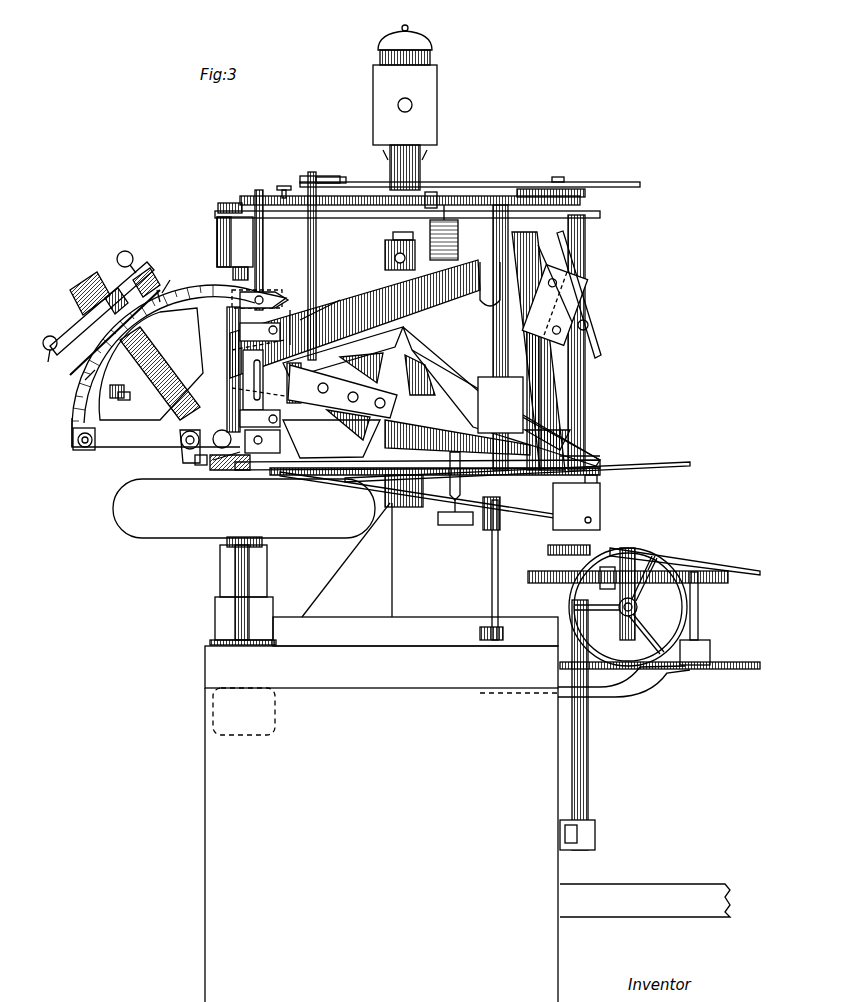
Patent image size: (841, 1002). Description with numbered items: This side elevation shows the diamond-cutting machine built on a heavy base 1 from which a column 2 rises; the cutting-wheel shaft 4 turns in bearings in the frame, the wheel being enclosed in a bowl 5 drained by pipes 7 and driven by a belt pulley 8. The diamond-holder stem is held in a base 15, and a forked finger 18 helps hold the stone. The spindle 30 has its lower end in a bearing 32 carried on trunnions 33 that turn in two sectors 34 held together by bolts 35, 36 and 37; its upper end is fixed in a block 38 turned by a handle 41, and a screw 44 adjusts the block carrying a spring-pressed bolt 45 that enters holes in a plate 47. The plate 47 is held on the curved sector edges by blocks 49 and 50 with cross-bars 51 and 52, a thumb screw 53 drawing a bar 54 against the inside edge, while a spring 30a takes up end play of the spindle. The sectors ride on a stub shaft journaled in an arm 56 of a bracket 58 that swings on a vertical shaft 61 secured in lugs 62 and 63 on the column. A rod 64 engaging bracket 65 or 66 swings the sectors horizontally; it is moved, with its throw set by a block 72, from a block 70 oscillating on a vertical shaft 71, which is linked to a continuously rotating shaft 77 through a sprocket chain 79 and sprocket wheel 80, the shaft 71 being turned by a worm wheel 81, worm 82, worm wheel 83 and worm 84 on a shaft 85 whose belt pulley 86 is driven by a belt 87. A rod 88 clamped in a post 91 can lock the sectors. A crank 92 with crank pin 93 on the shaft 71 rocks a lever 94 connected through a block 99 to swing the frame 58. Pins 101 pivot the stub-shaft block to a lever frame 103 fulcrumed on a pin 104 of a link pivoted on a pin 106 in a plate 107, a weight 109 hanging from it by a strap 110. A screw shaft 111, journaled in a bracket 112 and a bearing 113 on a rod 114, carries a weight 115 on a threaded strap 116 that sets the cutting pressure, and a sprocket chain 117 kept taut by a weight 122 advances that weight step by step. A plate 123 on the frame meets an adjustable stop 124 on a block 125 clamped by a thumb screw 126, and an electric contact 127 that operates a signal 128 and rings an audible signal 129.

The base 1 is at (452, 576).
The column 2 is at (433, 342).
The shaft 4 is at (220, 206).
The bowl 5 is at (125, 510).
The pipes 7 is at (235, 576).
The belt pulley 8 is at (277, 715).
The base 15 is at (225, 470).
The finger 18 is at (262, 470).
The spindle 30 is at (160, 350).
The spring 30a is at (85, 385).
The bearing 32 is at (213, 460).
The trunnions 33 is at (213, 435).
The sectors 34 is at (205, 284).
The bolt 35 is at (78, 442).
The bolt 36 is at (270, 292).
The bolt 37 is at (280, 441).
The block 38 is at (86, 282).
The handle 41 is at (47, 350).
The screw 44 is at (114, 292).
The spring-pressed bolt 45 is at (127, 251).
The plate 47 is at (150, 270).
The block 49 is at (74, 426).
The block 50 is at (172, 284).
The cross-bar 51 is at (240, 418).
The cross-bar 52 is at (162, 298).
The thumb screw 53 is at (118, 400).
The bar 54 is at (124, 392).
The arm 56 is at (240, 330).
The bracket 58 is at (330, 290).
The vertical shaft 61 is at (478, 302).
The lug 62 is at (385, 254).
The lug 63 is at (360, 540).
The rod 64 is at (650, 466).
The bracket 65 is at (195, 465).
The bracket 66 is at (88, 450).
The block 70 is at (600, 513).
The vertical shaft 71 is at (585, 256).
The block 72 is at (75, 338).
The continuously rotating shaft 77 is at (590, 773).
The sprocket chain 79 is at (633, 556).
The sprocket wheel 80 is at (590, 549).
The worm wheel 81 is at (540, 584).
The worm 82 is at (575, 586).
The worm wheel 83 is at (655, 566).
The worm 84 is at (640, 618).
The shaft 85 is at (621, 613).
The belt pulley 86 is at (707, 645).
The belt 87 is at (740, 571).
The rod 88 is at (400, 507).
The post 91 is at (336, 178).
The crank 92 is at (535, 189).
The crank pin 93 is at (566, 179).
The lever 94 is at (640, 184).
The block 99 is at (312, 172).
The pins 101 is at (250, 372).
The frame 103 is at (540, 440).
The pin 104 is at (355, 319).
The pin 106 is at (342, 391).
The plate 107 is at (292, 325).
The weight 109 is at (455, 525).
The strap 110 is at (450, 460).
The screw shaft 111 is at (430, 196).
The bracket 112 is at (512, 246).
The bearing 113 is at (272, 188).
The rod 114 is at (222, 245).
The weight 115 is at (432, 236).
The strap 116 is at (440, 200).
The sprocket chain 117 is at (500, 350).
The weight 122 is at (507, 400).
The plate 123 is at (600, 455).
The stop 124 is at (601, 352).
The block 125 is at (590, 330).
The thumb screw 126 is at (577, 286).
The electric contact 127 is at (590, 293).
The signal 128 is at (438, 98).
The audible signal 129 is at (428, 44).